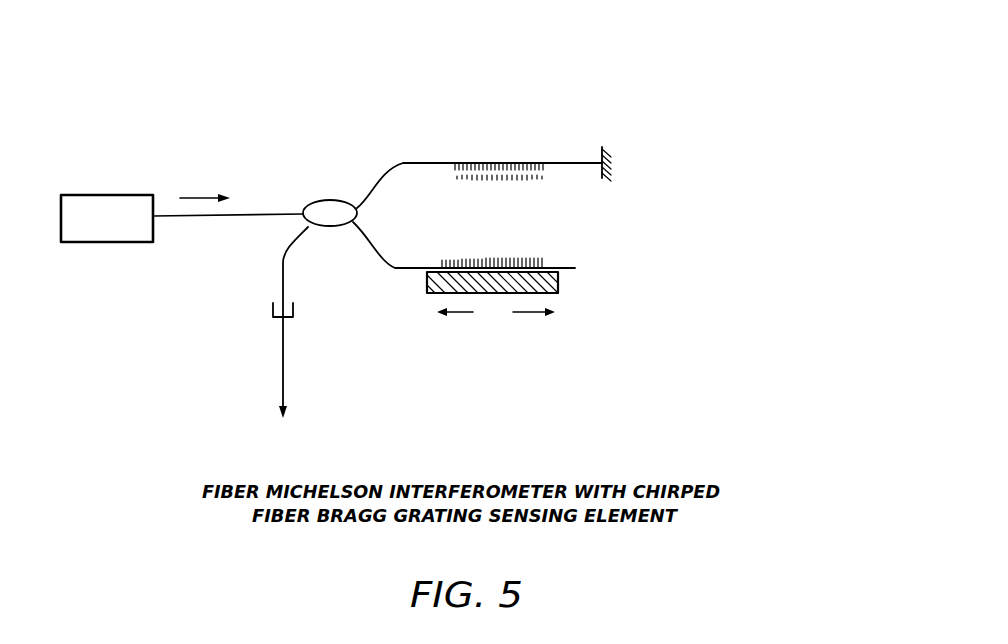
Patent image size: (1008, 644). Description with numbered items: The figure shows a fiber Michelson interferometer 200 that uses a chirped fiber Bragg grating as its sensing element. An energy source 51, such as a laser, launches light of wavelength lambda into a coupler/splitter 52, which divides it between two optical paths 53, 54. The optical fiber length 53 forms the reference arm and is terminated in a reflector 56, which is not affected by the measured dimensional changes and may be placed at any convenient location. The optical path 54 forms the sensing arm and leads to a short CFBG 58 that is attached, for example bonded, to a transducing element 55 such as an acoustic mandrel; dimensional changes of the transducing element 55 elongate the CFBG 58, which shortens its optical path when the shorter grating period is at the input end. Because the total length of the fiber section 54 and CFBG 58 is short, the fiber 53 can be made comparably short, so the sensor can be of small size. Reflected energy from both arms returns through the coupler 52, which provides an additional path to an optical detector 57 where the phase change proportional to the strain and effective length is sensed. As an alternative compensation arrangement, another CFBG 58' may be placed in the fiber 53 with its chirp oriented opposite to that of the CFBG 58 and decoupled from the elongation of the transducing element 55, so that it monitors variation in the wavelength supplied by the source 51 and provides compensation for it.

The fiber Michelson interferometer with chirped fiber Bragg grating sensing element 200 is at (497, 73).
The energy source 51 is at (107, 195).
The coupler/splitter 52 is at (320, 208).
The optical fiber length 53 is at (531, 160).
The optical path 54 is at (391, 262).
The transducing element 55 is at (558, 293).
The reflector 56 is at (610, 157).
The optical detector 57 is at (293, 310).
The CFBG 58 is at (582, 244).
The CFBG 58' is at (497, 196).